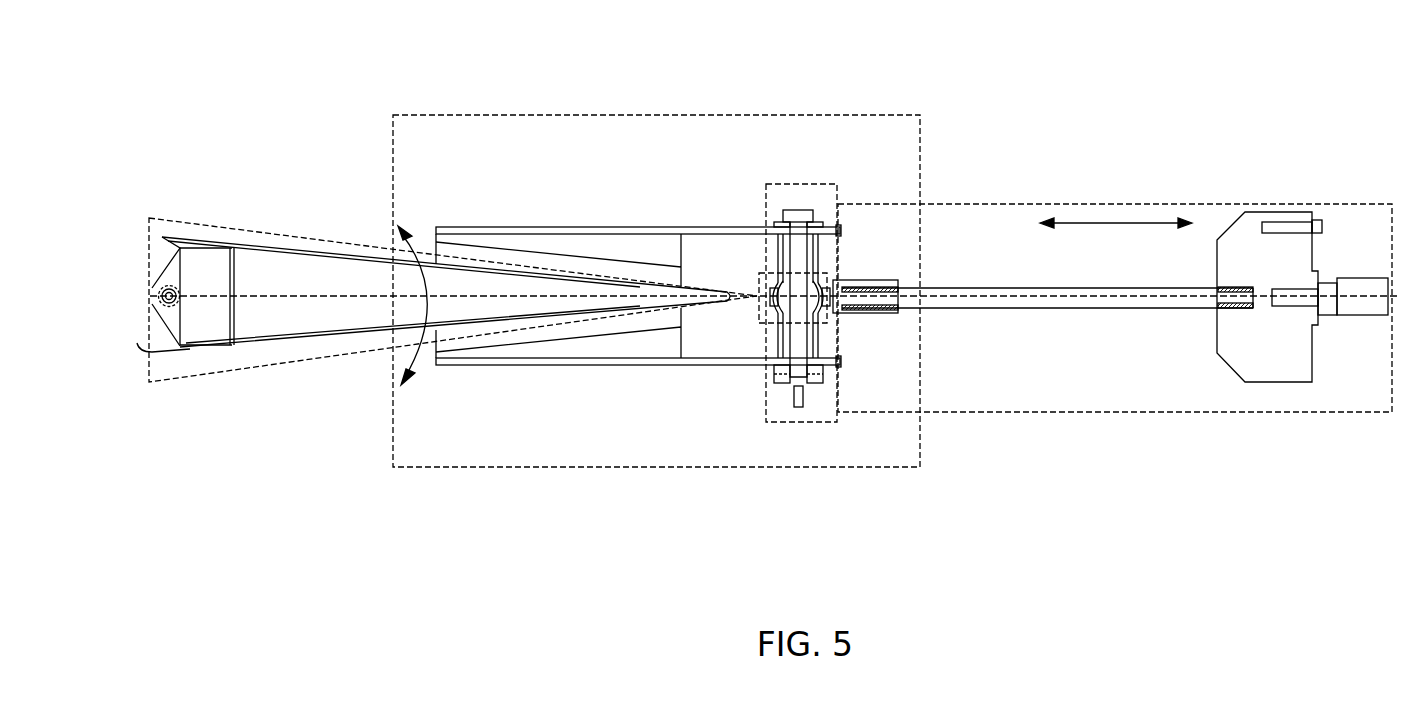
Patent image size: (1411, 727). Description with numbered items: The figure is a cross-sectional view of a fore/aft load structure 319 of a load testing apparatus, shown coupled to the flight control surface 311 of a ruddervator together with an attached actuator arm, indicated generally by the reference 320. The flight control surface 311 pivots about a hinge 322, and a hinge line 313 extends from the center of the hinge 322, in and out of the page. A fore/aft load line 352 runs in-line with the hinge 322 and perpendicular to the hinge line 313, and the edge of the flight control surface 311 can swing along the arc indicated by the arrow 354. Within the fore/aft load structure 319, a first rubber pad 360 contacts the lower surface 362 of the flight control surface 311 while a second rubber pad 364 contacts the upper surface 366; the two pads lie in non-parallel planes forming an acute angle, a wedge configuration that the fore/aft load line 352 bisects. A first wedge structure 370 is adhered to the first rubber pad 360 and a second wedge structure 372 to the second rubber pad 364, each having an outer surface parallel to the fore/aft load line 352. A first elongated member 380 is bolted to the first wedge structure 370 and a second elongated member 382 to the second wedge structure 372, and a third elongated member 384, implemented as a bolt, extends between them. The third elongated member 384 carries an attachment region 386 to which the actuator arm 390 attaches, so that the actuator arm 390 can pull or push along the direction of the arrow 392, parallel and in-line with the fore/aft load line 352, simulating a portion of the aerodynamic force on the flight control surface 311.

The flight control surface 311 is at (275, 232).
The hinge line 313 is at (180, 290).
The fore/aft load structure 319 is at (599, 113).
The attached actuator arm 320 is at (938, 69).
The hinge 322 is at (163, 234).
The fore/aft load line 352 is at (249, 300).
The arrow 354 is at (432, 279).
The first rubber pad 360 is at (682, 318).
The lower surface 362 is at (472, 330).
The second rubber pad 364 is at (682, 273).
The upper surface 366 is at (515, 273).
The first wedge structure 370 is at (682, 344).
The second wedge structure 372 is at (682, 247).
The first elongated member 380 is at (612, 366).
The second elongated member 382 is at (614, 227).
The third elongated member 384 is at (802, 182).
The attachment region 386 is at (820, 284).
The actuator arm 390 is at (995, 203).
The arrow 392 is at (1116, 244).